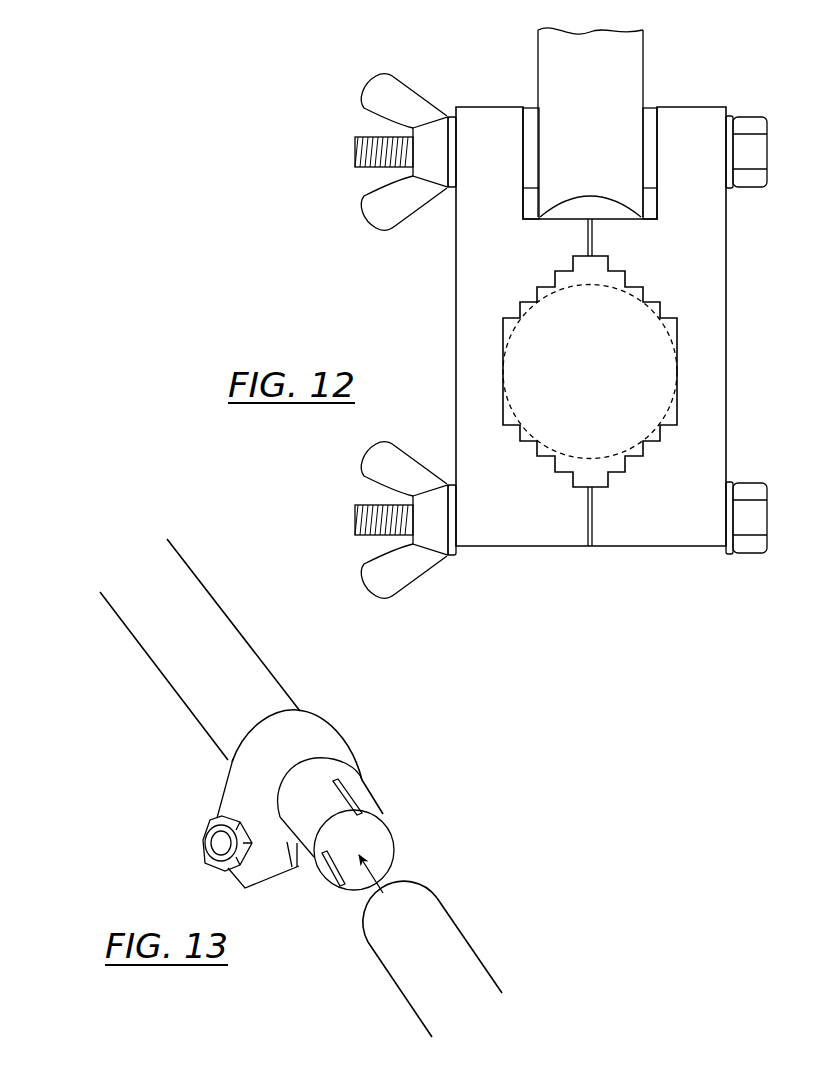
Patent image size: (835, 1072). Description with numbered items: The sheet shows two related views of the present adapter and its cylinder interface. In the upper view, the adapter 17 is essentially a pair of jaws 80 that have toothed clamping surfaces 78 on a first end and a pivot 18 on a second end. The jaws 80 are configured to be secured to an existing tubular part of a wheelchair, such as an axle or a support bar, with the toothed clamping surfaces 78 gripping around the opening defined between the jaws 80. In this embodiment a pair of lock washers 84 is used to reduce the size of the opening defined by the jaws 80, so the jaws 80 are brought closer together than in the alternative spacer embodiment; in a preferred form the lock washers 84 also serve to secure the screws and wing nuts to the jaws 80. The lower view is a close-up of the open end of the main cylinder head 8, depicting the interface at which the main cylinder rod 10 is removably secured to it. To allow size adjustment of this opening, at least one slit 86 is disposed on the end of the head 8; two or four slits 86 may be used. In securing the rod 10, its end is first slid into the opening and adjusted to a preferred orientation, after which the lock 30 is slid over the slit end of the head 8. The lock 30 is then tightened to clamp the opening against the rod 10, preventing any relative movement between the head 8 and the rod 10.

In FIG. 12, the main cylinder head 8 is at (644, 34).
In FIG. 13, the main cylinder head 8 is at (253, 671).
In FIG. 13, the main cylinder rod 10 is at (393, 956).
In FIG. 12, the adapter 17 is at (416, 298).
In FIG. 12, the pivot 18 is at (776, 185).
In FIG. 13, the lock 30 is at (232, 763).
In FIG. 12, the toothed clamping surfaces 78 is at (646, 298).
In FIG. 12, the jaws 80 is at (456, 374).
In FIG. 12, the lock washers 84 is at (450, 116).
In FIG. 13, the slits 86 is at (360, 807).